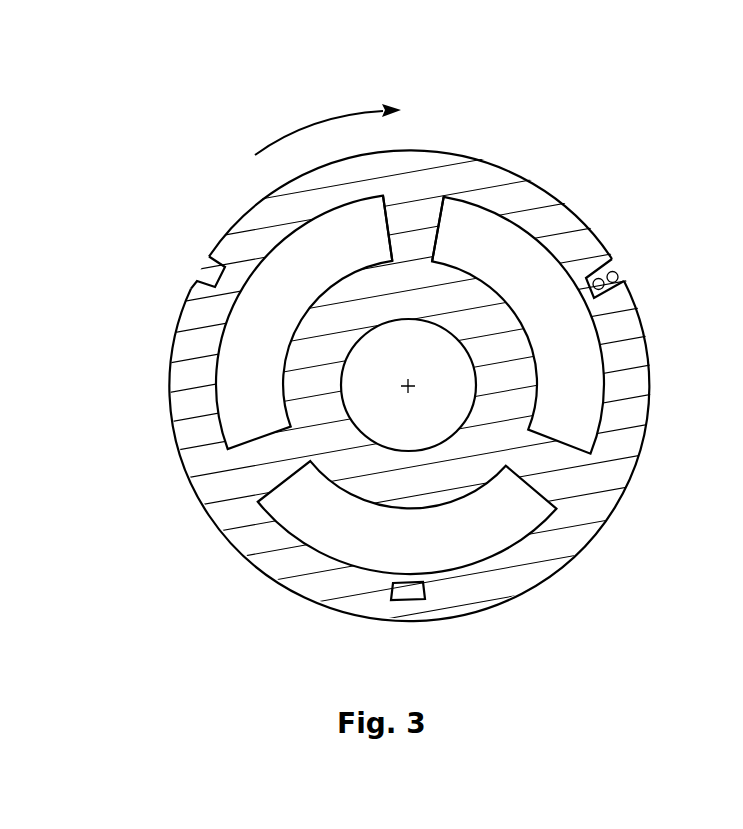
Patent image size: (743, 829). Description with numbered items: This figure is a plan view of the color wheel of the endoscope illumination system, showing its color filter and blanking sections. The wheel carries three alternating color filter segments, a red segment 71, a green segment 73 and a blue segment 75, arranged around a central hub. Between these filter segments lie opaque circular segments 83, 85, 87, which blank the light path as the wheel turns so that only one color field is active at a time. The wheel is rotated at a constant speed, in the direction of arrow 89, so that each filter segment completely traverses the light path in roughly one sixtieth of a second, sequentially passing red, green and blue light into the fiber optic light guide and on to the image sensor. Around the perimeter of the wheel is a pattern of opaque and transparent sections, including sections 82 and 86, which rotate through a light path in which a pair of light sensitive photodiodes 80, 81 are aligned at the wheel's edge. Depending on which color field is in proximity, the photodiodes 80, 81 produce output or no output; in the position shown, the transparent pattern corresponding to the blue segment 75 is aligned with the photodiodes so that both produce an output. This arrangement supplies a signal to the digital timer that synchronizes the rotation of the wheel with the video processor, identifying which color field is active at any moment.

The red color filter segment 71 is at (253, 365).
The green color filter segment 73 is at (342, 524).
The blue color filter segment 75 is at (573, 370).
The photodiode 80 is at (597, 279).
The photodiode 81 is at (614, 276).
The opaque and transparent section 82 is at (208, 273).
The opaque circular segment 83 is at (263, 457).
The opaque circular segment 85 is at (560, 484).
The opaque and transparent section 86 is at (410, 592).
The opaque circular segment 87 is at (413, 213).
The direction-of-rotation arrow 89 is at (312, 122).